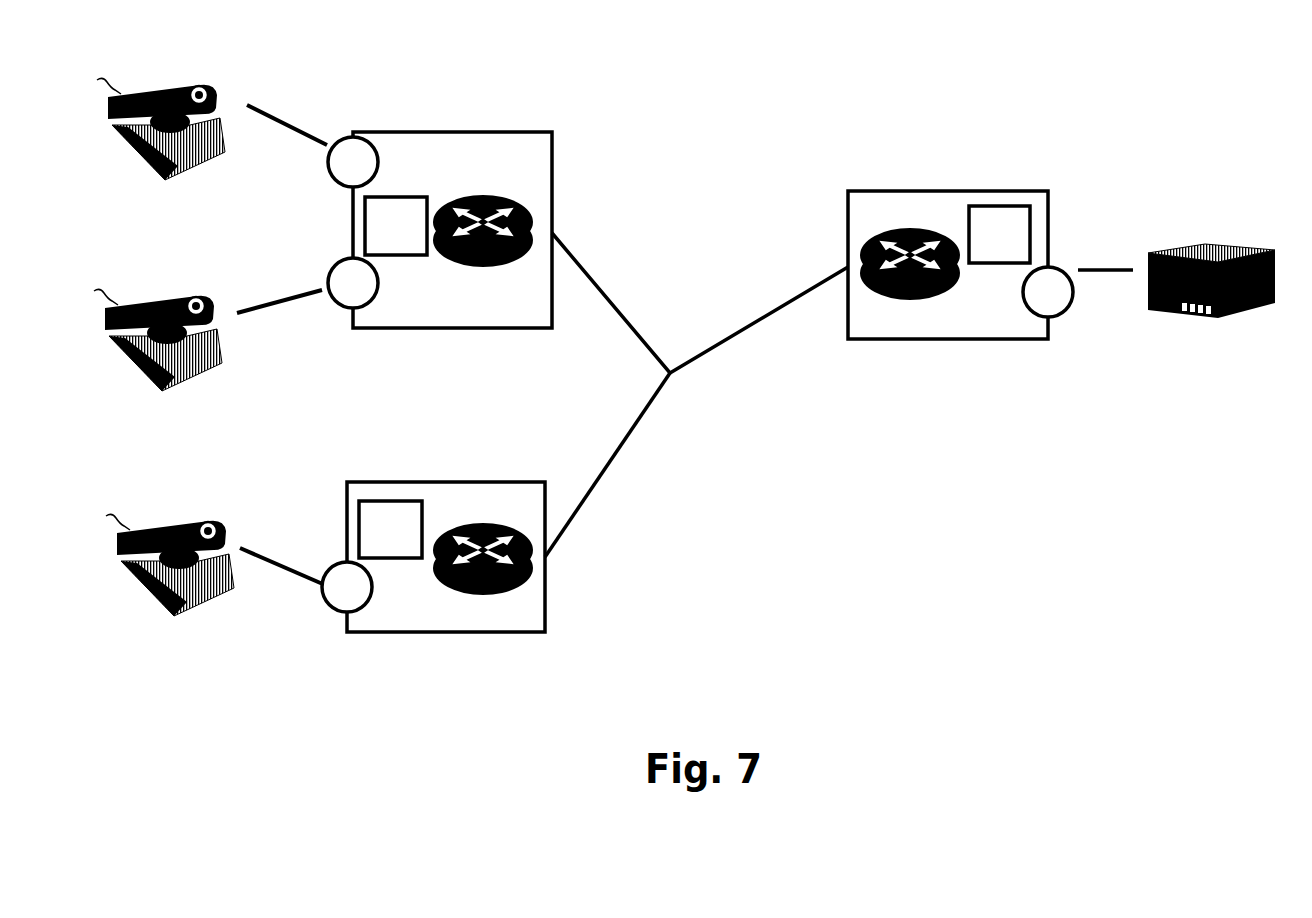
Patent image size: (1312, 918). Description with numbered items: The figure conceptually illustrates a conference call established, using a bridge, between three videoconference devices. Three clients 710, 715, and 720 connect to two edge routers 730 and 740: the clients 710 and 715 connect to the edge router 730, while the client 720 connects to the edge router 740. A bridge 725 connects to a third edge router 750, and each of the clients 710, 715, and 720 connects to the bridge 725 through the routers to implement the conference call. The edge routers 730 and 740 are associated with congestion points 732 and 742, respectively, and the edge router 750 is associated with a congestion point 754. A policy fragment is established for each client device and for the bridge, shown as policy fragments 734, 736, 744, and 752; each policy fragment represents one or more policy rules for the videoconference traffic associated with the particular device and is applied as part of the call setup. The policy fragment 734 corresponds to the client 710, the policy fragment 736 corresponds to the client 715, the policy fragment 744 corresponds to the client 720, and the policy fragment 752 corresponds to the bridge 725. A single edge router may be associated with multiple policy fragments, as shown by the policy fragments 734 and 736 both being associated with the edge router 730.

The client 710 is at (220, 58).
The client 715 is at (200, 265).
The client 720 is at (200, 498).
The bridge 725 is at (1276, 237).
The edge router 730 is at (552, 132).
The congestion point 732 is at (364, 220).
The policy fragment 734 is at (328, 160).
The policy fragment 736 is at (327, 283).
The edge router 740 is at (560, 470).
The congestion point 742 is at (360, 502).
The policy fragment 744 is at (324, 590).
The edge router 750 is at (926, 178).
The policy fragment 752 is at (1065, 311).
The congestion point 754 is at (1030, 220).